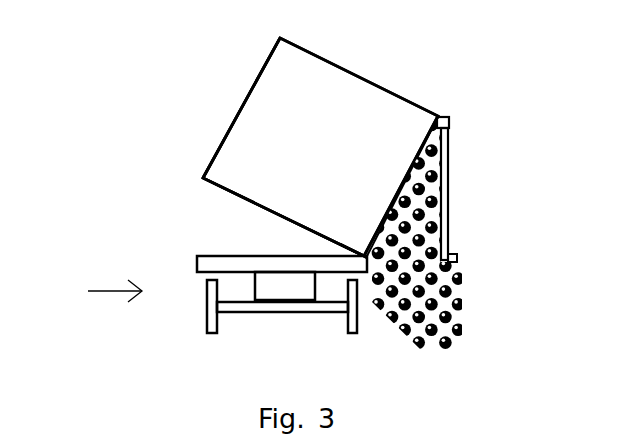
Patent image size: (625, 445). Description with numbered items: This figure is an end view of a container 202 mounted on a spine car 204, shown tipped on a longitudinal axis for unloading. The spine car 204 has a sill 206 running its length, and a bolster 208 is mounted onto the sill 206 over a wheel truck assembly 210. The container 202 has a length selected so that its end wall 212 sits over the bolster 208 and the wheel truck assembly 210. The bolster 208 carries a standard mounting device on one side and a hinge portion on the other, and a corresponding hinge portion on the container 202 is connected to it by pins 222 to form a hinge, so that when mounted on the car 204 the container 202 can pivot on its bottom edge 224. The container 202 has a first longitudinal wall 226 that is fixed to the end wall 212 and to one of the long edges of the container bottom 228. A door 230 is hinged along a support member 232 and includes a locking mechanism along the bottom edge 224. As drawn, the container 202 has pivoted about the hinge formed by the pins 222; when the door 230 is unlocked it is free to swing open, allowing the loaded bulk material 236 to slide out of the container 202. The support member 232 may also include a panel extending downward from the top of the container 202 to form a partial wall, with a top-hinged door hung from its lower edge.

The container 202 is at (298, 107).
The spine car 204 is at (92, 292).
The sill 206 is at (287, 288).
The bolster 208 is at (197, 259).
The wheel truck assembly 210 is at (207, 320).
The end wall 212 is at (302, 158).
The pin 222 is at (360, 254).
The bottom edge 224 is at (457, 255).
The first longitudinal wall 226 is at (269, 57).
The container bottom 228 is at (230, 191).
The door 230 is at (448, 183).
The support member 232 is at (446, 116).
The bulk material 236 is at (443, 305).